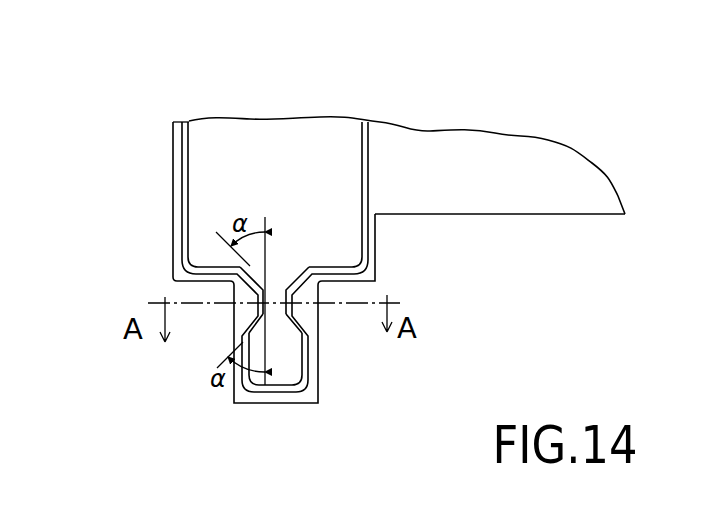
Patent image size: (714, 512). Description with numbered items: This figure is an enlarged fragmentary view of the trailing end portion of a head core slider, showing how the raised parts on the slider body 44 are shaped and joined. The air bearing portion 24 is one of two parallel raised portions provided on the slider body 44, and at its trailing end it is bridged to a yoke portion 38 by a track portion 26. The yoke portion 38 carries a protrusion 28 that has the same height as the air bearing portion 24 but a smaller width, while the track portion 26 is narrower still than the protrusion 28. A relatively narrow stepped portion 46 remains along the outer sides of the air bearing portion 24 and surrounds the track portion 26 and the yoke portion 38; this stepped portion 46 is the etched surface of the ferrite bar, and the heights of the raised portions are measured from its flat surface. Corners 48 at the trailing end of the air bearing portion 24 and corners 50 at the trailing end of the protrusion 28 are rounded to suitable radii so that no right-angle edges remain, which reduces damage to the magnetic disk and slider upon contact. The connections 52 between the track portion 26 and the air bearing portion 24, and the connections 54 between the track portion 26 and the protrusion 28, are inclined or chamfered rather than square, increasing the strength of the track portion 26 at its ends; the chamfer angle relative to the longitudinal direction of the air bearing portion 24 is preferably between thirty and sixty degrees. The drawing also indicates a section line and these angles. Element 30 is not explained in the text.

The air bearing portion 24 is at (277, 140).
The track portion 26 is at (300, 298).
The protrusion 28 is at (295, 365).
The inner liner layer 30 is at (182, 167).
The yoke portion 38 is at (226, 403).
The slider body 44 is at (170, 217).
The stepped portion 46 is at (177, 122).
The corners 48 is at (365, 268).
The corners 50 is at (250, 394).
The connections 52 is at (292, 270).
The connections 54 is at (305, 325).